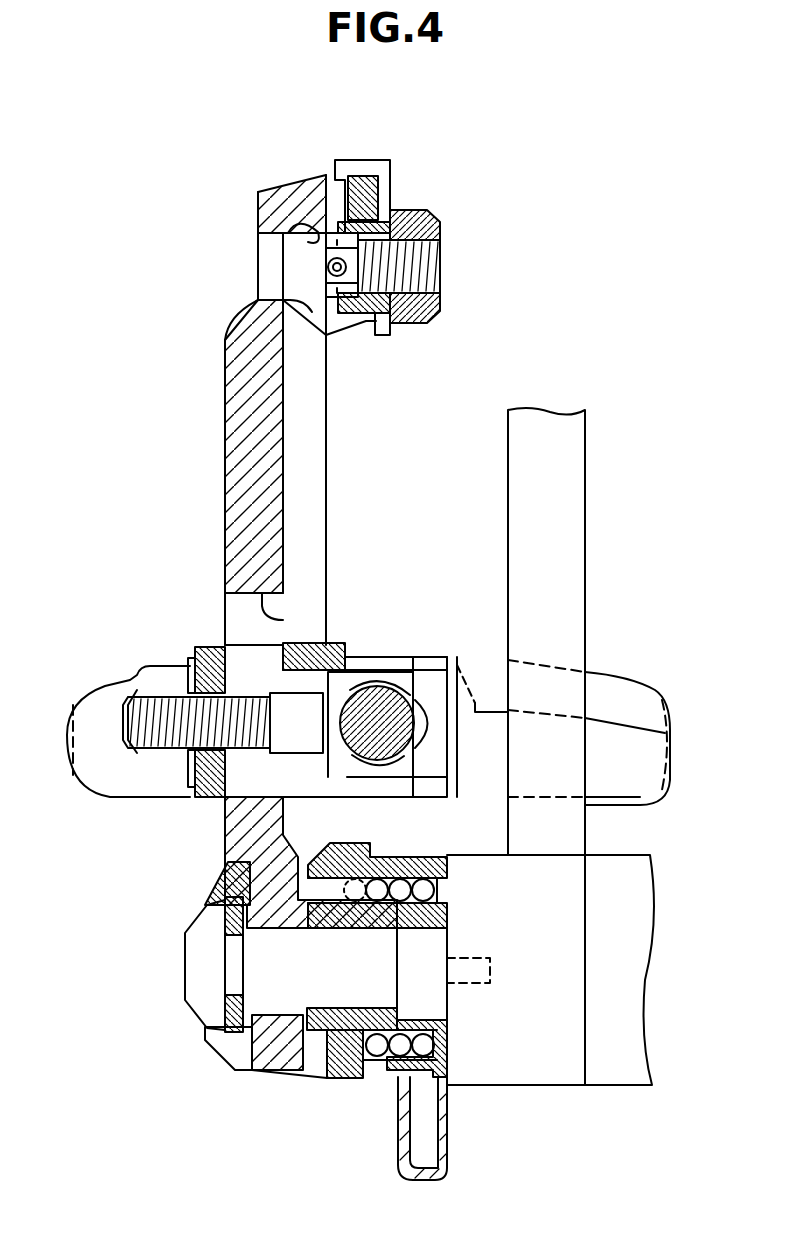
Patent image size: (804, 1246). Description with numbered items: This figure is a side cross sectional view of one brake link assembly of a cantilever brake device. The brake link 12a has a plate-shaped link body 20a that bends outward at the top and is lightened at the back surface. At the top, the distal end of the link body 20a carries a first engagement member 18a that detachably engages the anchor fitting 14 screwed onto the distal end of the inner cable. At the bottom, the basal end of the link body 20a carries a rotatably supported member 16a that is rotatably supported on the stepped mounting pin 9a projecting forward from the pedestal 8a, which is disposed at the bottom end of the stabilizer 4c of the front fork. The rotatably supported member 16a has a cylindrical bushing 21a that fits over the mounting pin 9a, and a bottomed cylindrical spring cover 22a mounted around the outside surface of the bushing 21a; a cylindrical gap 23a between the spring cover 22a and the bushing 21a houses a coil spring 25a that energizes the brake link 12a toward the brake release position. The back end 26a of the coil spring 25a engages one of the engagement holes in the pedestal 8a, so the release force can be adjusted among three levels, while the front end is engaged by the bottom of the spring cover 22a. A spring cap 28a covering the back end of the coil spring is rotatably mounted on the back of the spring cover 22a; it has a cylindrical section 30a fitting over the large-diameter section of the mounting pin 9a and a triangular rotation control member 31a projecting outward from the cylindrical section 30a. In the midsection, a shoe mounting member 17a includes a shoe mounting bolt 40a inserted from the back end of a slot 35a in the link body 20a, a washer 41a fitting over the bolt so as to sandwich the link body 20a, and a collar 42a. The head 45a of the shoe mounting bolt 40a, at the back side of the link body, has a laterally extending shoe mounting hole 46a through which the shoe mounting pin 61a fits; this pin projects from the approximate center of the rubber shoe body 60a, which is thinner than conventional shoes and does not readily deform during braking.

The stabilizer 4c is at (590, 447).
The pedestal 8a is at (585, 1085).
The mounting pin 9a is at (250, 983).
The brake link 12a is at (203, 538).
The anchor fitting 14 is at (402, 200).
The rotatably supported member 16a is at (263, 1080).
The shoe mounting member 17a is at (245, 612).
The first engagement member 18a is at (300, 232).
The link body 20a is at (278, 548).
The bushing 21a is at (343, 994).
The spring cover 22a is at (337, 1075).
The cylindrical gap 23a is at (387, 1063).
The coil spring 25a is at (450, 1072).
The back end of coil spring 26a is at (492, 942).
The spring cap 28a is at (460, 1052).
The cylindrical section 30a is at (450, 876).
The rotation control member 31a is at (447, 1143).
The slot 35a is at (283, 610).
The shoe mounting bolt 40a is at (215, 787).
The washer 41a is at (232, 822).
The collar 42a is at (332, 643).
The head of shoe mounting bolt 45a is at (392, 680).
The shoe mounting hole 46a is at (413, 705).
The shoe body 60a is at (615, 690).
The shoe mounting pin 61a is at (382, 752).